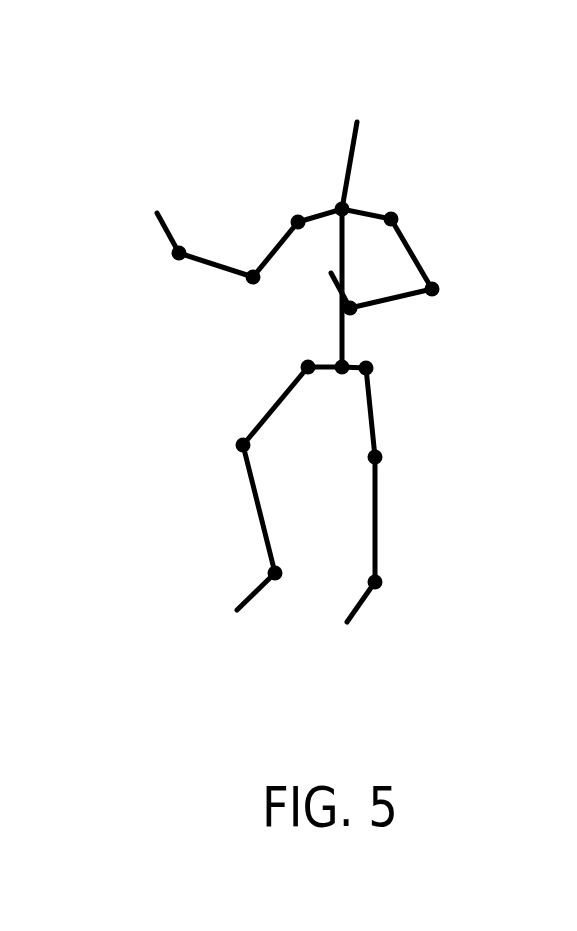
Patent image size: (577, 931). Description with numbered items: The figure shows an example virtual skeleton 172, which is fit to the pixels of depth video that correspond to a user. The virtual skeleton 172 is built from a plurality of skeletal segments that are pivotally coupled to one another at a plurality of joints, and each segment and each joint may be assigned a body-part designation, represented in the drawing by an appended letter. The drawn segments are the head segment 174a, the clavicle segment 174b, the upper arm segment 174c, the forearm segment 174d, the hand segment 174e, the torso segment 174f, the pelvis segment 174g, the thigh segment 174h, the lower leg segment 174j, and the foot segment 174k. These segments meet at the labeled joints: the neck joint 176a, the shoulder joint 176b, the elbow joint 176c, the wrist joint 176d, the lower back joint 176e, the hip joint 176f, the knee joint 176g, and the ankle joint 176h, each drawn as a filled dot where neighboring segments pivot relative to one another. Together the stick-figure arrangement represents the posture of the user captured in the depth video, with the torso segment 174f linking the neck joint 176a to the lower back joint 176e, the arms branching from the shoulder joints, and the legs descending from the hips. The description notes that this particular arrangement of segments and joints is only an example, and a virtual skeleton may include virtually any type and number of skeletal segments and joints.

The virtual skeleton 172 is at (325, 385).
The head skeletal segment 174a is at (382, 101).
The clavicle skeletal segment 174b is at (368, 212).
The upper arm skeletal segment 174c is at (277, 245).
The forearm skeletal segment 174d is at (397, 300).
The hand skeletal segment 174e is at (163, 227).
The torso skeletal segment 174f is at (340, 332).
The pelvis skeletal segment 174g is at (325, 372).
The thigh skeletal segment 174h is at (275, 407).
The lower leg skeletal segment 174j is at (377, 522).
The foot skeletal segment 174k is at (248, 598).
The neck joint 176a is at (338, 208).
The shoulder joint 176b is at (397, 220).
The elbow joint 176c is at (252, 282).
The wrist joint 176d is at (355, 301).
The lower back joint 176e is at (347, 363).
The hip joint 176f is at (370, 374).
The knee joint 176g is at (380, 457).
The ankle joint 176h is at (367, 580).